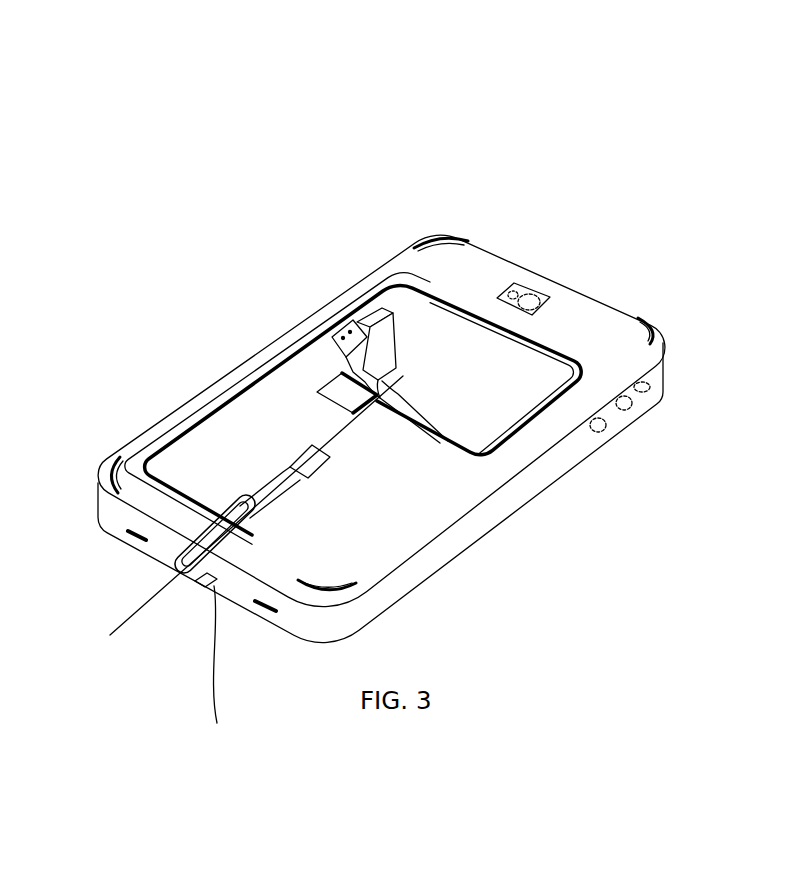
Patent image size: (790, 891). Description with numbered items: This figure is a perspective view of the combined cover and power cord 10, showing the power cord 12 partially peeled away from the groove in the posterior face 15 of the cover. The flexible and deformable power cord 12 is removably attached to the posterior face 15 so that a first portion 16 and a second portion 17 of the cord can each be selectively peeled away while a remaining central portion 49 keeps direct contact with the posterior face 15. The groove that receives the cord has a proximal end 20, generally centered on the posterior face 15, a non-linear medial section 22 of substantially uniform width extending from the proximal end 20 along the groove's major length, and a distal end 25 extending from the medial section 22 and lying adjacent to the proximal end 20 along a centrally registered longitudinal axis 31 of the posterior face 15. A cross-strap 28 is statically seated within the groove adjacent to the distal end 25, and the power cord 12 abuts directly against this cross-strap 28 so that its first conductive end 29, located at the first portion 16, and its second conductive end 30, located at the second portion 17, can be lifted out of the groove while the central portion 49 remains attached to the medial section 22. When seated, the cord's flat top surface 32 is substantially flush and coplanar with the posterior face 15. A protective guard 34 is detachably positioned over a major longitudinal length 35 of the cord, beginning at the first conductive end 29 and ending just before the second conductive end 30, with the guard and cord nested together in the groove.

The combined cover and power cord 10 is at (421, 128).
The power cord 12 is at (190, 488).
The posterior face 15 is at (453, 503).
The first portion 16 is at (421, 393).
The second portion 17 is at (188, 598).
The proximal end 20 is at (372, 422).
The medial section 22 is at (568, 330).
The distal end 25 is at (327, 478).
The cross-strap 28 is at (228, 527).
The first conductive end 29 is at (333, 337).
The second conductive end 30 is at (228, 683).
The centrally registered longitudinal axis 31 is at (137, 607).
The flat top surface 32 is at (243, 389).
The protective guard 34 is at (385, 340).
The major longitudinal length 35 is at (471, 292).
The central portion 49 is at (322, 313).